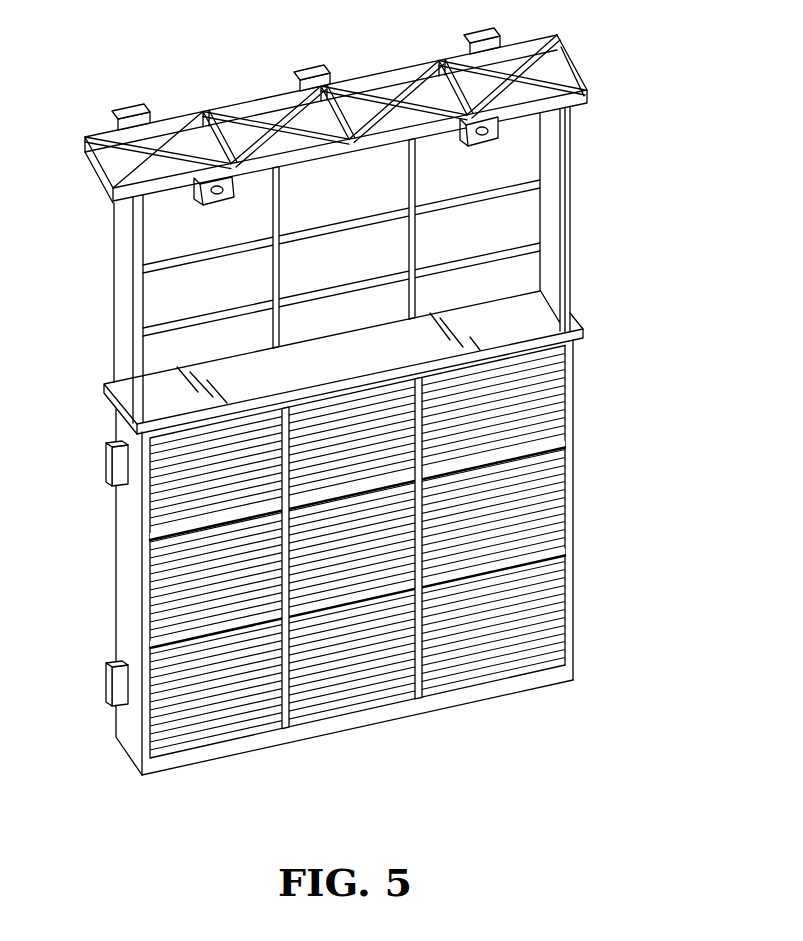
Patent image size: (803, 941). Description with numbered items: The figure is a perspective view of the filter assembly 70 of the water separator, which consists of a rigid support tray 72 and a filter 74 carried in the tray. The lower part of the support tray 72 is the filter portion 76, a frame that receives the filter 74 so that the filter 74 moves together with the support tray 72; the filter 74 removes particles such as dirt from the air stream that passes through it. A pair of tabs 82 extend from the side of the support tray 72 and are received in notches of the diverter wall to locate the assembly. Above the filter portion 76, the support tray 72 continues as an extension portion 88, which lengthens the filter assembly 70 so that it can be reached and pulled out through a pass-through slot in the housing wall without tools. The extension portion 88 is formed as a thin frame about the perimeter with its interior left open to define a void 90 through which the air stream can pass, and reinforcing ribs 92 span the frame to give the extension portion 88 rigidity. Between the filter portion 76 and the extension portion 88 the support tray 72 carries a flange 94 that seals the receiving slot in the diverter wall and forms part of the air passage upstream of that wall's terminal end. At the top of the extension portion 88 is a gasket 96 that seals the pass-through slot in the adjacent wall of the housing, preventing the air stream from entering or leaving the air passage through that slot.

The filter assembly 70 is at (361, 224).
The support tray 72 is at (568, 401).
The filter 74 is at (163, 604).
The filter portion 76 is at (345, 557).
The tabs 82 is at (104, 466).
The extension portion 88 is at (552, 182).
The void 90 is at (355, 180).
The reinforcing ribs 92 is at (410, 182).
The flange 94 is at (580, 333).
The gasket 96 is at (583, 99).